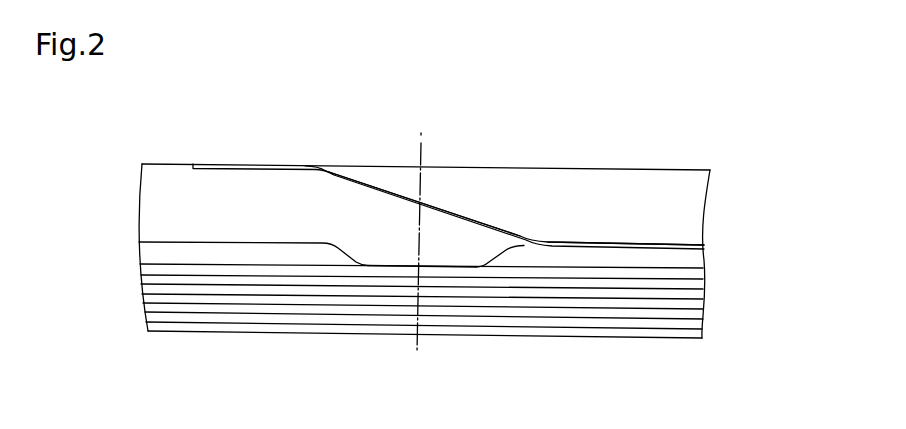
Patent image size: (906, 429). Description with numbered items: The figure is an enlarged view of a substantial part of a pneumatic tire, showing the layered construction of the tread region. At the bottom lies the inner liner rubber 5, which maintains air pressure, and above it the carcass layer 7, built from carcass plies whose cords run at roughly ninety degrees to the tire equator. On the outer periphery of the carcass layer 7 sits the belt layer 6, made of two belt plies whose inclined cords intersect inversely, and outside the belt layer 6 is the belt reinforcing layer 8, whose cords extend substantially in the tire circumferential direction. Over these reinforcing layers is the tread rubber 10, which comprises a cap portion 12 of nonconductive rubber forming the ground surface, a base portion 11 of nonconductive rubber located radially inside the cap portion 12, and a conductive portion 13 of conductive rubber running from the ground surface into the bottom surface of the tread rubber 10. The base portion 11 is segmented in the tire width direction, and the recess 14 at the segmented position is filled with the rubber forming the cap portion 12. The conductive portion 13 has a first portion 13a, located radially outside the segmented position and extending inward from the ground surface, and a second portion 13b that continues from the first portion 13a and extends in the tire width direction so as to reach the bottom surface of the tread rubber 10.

The inner liner rubber 5 is at (190, 332).
The belt layer 6 is at (340, 293).
The carcass layer 7 is at (265, 313).
The belt reinforcing layer 8 is at (615, 282).
The tread rubber 10 is at (677, 167).
The base portion 11 is at (158, 257).
The cap portion 12 is at (157, 200).
The conductive portion 13 is at (685, 243).
The first portion 13a is at (388, 188).
The second portion 13b is at (602, 238).
The recess 14 is at (451, 257).